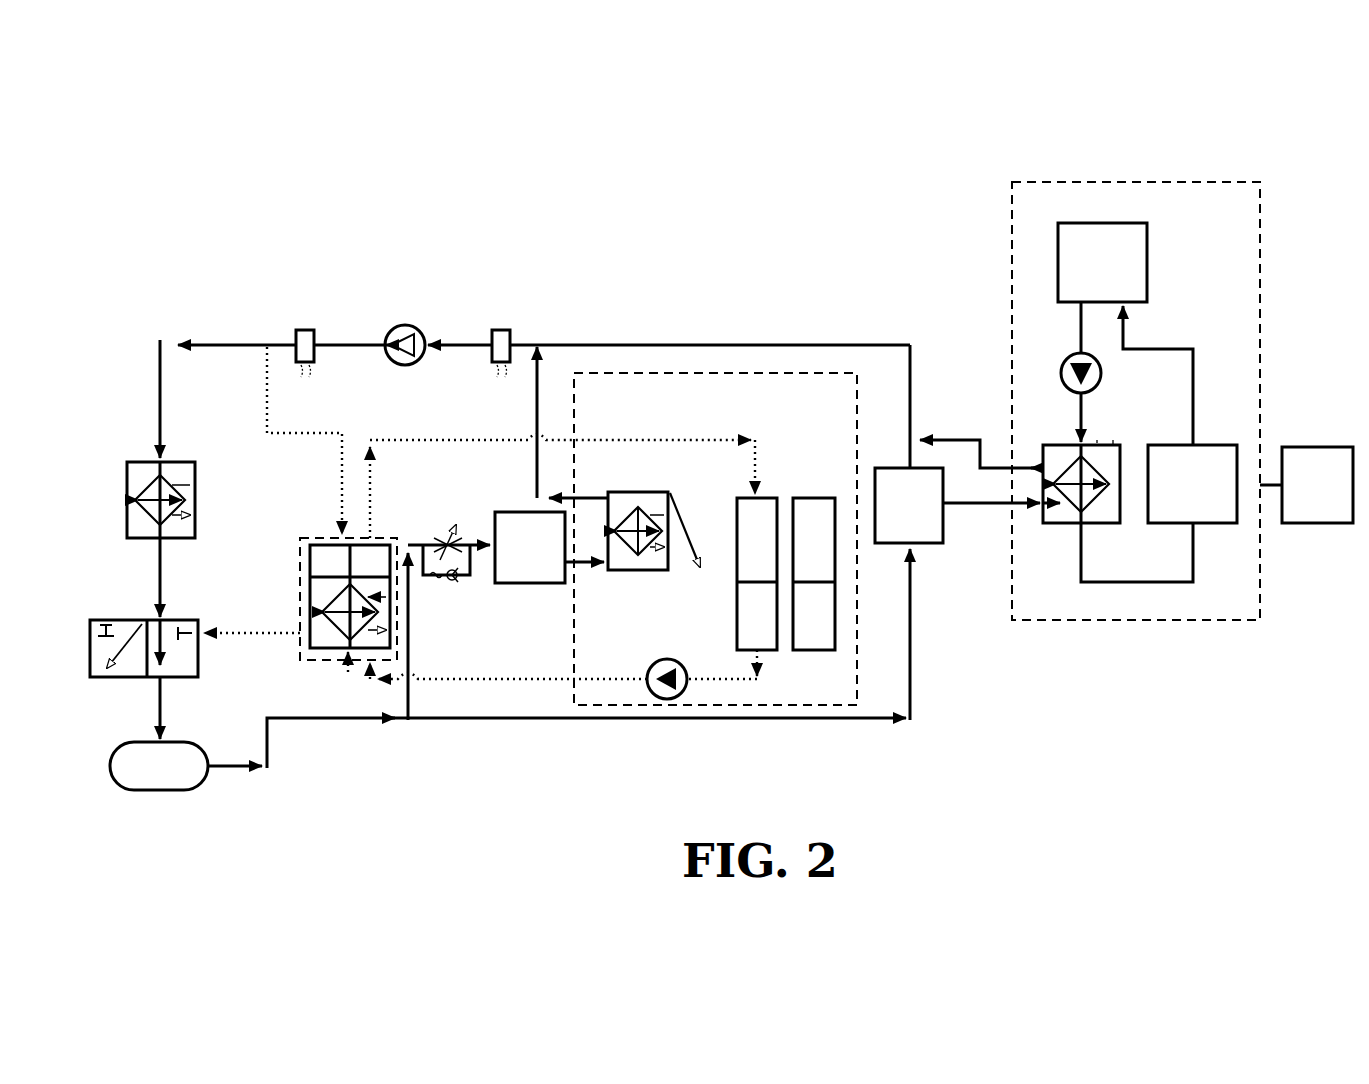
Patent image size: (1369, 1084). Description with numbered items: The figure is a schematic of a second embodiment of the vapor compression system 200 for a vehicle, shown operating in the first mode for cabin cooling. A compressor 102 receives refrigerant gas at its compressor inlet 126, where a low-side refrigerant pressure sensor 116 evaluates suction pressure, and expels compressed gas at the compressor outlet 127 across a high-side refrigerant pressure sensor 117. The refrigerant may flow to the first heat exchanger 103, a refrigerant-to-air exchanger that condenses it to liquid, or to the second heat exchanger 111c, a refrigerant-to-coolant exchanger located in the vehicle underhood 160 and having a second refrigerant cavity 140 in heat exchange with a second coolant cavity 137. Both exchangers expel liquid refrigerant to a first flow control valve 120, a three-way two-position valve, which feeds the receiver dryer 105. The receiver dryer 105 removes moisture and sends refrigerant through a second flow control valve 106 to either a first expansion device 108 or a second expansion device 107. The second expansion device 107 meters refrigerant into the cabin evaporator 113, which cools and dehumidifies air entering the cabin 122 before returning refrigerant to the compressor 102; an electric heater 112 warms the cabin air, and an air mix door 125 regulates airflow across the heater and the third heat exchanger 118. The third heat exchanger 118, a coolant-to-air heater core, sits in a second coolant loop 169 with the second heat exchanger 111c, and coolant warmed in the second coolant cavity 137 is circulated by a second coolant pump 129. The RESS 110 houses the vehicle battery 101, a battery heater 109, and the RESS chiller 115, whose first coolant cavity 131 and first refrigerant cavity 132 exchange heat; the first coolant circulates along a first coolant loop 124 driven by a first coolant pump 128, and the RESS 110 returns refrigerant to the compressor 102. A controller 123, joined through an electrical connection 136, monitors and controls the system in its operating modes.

The vapor compression system 200 is at (670, 310).
The vehicle battery 101 is at (1102, 262).
The compressor 102 is at (420, 326).
The first heat exchanger 103 is at (127, 475).
The receiver dryer 105 is at (159, 766).
The second flow control valve 106 is at (430, 580).
The second expansion device 107 is at (530, 547).
The first expansion device 108 is at (909, 505).
The battery heater 109 is at (1192, 484).
The RESS 110 is at (1160, 182).
The second heat exchanger 111c is at (349, 664).
The electric heater 112 is at (814, 574).
The cabin evaporator 113 is at (644, 572).
The RESS chiller 115 is at (1113, 440).
The low-side refrigerant pressure sensor 116 is at (500, 330).
The high-side refrigerant pressure sensor 117 is at (298, 330).
The third heat exchanger 118 is at (757, 574).
The first flow control valve 120 is at (90, 632).
The cabin 122 is at (805, 380).
The controller 123 is at (1306, 485).
The first coolant loop 124 is at (1172, 348).
The air mix door 125 is at (683, 525).
The compressor inlet 126 is at (434, 338).
The compressor outlet 127 is at (382, 338).
The first coolant pump 128 is at (1064, 368).
The second coolant pump 129 is at (650, 672).
The first coolant cavity 131 is at (1097, 443).
The first refrigerant cavity 132 is at (1055, 445).
The electrical connection 136 is at (1268, 490).
The second coolant cavity 137 is at (354, 599).
The second refrigerant cavity 140 is at (350, 596).
The vehicle underhood 160 is at (400, 538).
The second coolant loop 169 is at (457, 436).